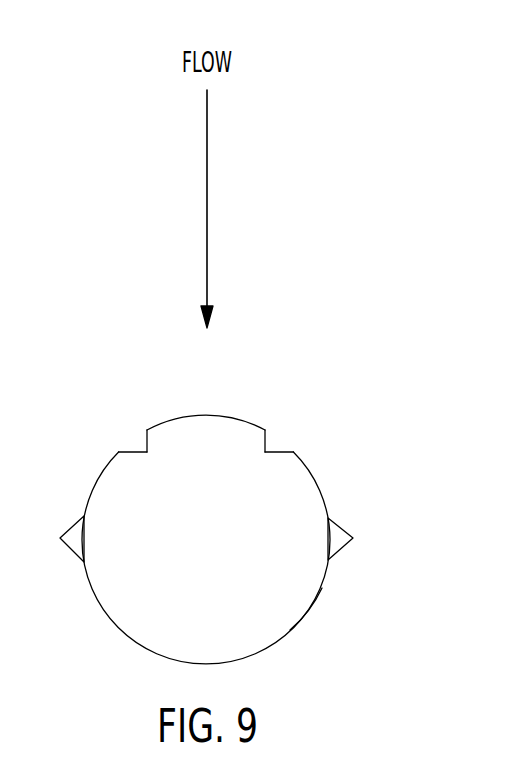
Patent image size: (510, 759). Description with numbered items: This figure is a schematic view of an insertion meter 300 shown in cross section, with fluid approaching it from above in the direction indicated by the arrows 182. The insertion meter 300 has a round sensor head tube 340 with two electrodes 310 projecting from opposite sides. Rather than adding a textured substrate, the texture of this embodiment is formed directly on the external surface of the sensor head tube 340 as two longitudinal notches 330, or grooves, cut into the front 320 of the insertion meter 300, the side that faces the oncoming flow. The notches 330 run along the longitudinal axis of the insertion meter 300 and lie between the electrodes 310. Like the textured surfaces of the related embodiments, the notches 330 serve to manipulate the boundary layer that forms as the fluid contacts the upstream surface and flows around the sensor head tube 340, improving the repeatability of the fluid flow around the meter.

The arrows 182 is at (207, 197).
The insertion meter 300 is at (305, 462).
The electrodes 310 is at (73, 523).
The front 320 is at (166, 392).
The longitudinal notches 330 is at (132, 452).
The sensor head tube 340 is at (322, 588).